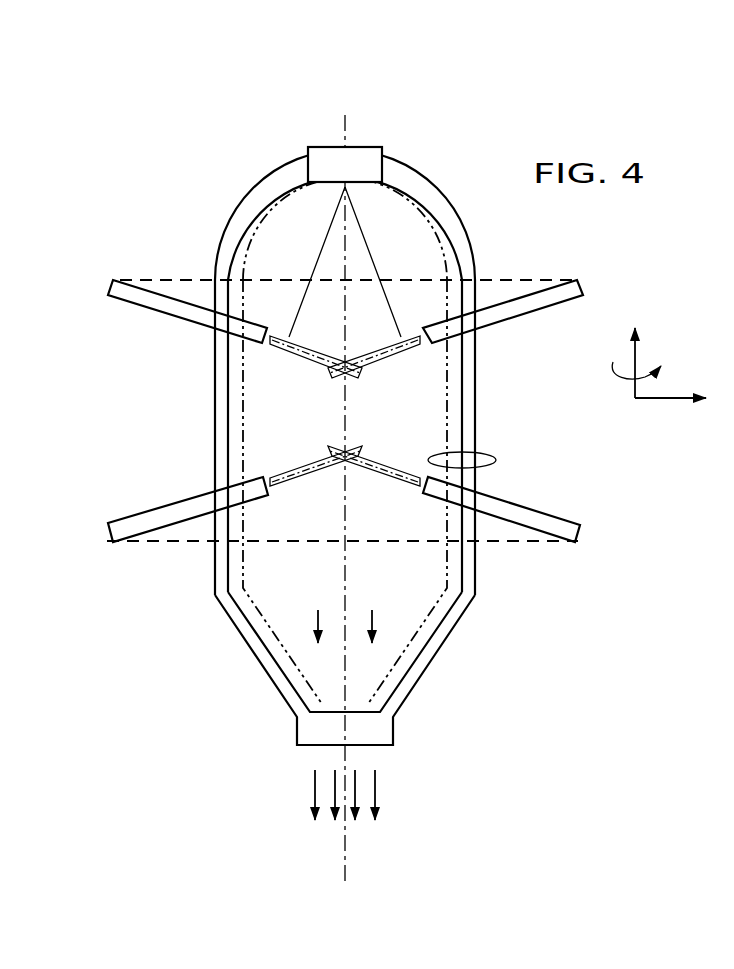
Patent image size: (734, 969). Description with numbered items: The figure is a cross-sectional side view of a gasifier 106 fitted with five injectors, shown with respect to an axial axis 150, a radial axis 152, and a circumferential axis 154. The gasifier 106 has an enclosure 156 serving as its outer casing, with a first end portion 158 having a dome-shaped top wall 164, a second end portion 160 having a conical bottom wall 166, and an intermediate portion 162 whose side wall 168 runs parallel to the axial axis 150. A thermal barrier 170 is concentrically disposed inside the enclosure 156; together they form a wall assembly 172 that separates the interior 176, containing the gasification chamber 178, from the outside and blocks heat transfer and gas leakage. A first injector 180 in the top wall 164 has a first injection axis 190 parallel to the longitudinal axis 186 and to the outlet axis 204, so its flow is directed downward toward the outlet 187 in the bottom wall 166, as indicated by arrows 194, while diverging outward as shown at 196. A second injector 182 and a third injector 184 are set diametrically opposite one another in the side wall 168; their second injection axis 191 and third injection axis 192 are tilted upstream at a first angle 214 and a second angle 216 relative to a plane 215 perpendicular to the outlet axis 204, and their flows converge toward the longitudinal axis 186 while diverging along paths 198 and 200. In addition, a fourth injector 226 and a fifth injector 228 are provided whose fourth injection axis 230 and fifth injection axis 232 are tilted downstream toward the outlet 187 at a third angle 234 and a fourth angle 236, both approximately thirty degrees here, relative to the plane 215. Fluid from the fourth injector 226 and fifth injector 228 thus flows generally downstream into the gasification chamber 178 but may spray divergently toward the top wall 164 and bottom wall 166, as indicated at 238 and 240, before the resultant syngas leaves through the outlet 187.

The gasifier 106 is at (355, 417).
The axial axis 150 is at (637, 348).
The radial axis 152 is at (667, 400).
The circumferential axis 154 is at (618, 377).
The enclosure 156 is at (480, 262).
The first end portion 158 is at (460, 185).
The second end portion 160 is at (220, 657).
The intermediate portion 162 is at (492, 423).
The top wall 164 is at (252, 205).
The bottom wall 166 is at (272, 670).
The side wall 168 is at (218, 425).
The thermal barrier 170 is at (443, 246).
The wall assembly 172 is at (490, 454).
The interior 176 is at (374, 592).
The gasification chamber 178 is at (418, 402).
The first injector 180 is at (363, 155).
The second injector 182 is at (138, 522).
The third injector 184 is at (552, 522).
The longitudinal axis 186 is at (345, 672).
The outlet 187 is at (380, 748).
The first injection axis 190 is at (343, 213).
The second injection axis 191 is at (308, 463).
The third injection axis 192 is at (380, 463).
The downward flow direction arrows 194 is at (316, 627).
The divergent spray of first injector 196 is at (318, 253).
The divergent flow of second injector 198 is at (278, 473).
The flow paths of third injector 200 is at (412, 473).
The outlet axis 204 is at (345, 688).
The first angle 214 is at (270, 483).
The plane 215 is at (180, 277).
The second angle 216 is at (420, 483).
The fourth injector 226 is at (142, 311).
The fifth injector 228 is at (547, 308).
The fourth injection axis 230 is at (308, 357).
The fifth injection axis 232 is at (381, 357).
The third angle 234 is at (285, 298).
The fourth angle 236 is at (405, 298).
The divergent spray of fourth injector 238 is at (311, 350).
The divergent spray of fifth injector 240 is at (378, 350).